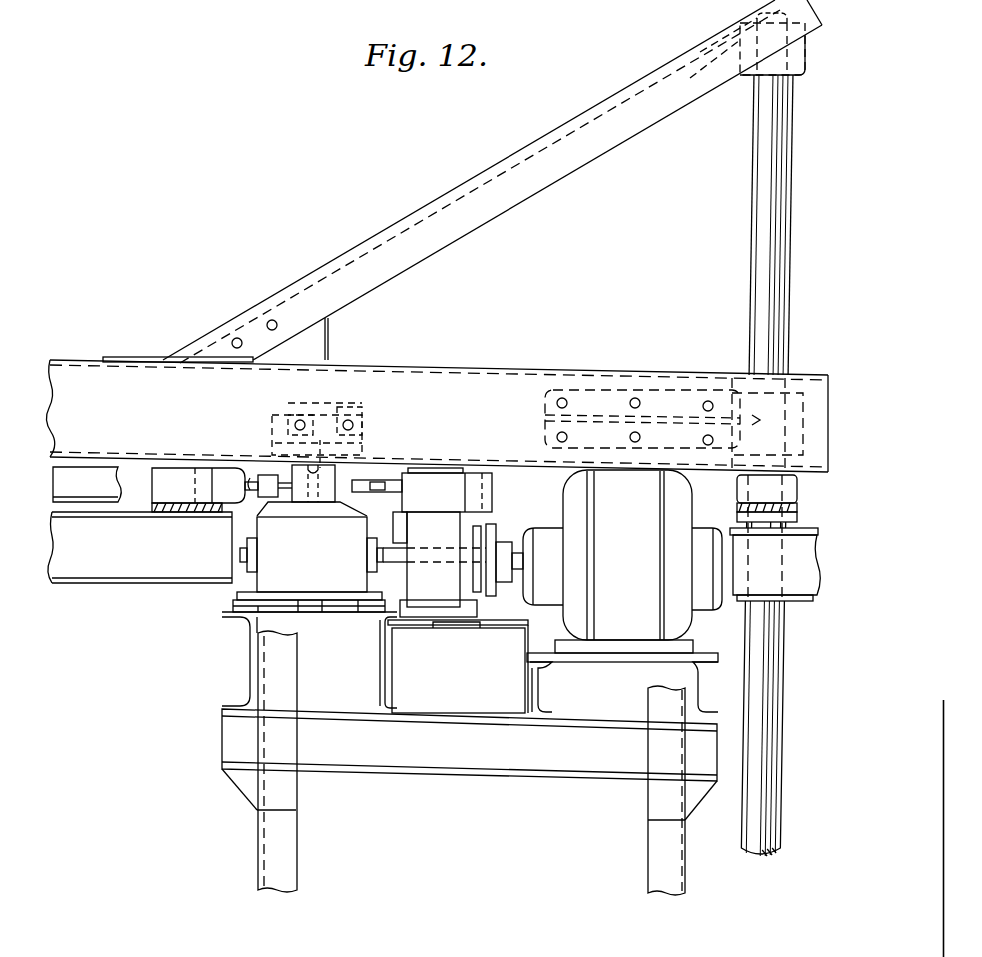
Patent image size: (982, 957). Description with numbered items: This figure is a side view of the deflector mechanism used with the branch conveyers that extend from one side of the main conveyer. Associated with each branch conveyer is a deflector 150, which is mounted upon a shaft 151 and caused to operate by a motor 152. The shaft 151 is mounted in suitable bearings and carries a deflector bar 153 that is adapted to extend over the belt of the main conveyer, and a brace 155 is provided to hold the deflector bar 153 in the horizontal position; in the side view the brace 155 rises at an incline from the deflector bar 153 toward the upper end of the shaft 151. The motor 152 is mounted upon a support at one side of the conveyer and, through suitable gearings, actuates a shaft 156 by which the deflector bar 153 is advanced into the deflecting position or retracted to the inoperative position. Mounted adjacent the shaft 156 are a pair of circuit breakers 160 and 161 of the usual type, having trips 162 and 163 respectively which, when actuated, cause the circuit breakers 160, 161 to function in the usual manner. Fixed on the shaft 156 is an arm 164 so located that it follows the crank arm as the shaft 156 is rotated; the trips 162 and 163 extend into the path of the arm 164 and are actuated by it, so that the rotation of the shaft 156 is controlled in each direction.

The deflector 150 is at (478, 362).
The shaft 151 is at (766, 653).
The motor 152 is at (622, 566).
The deflector bar 153 is at (581, 419).
The brace 155 is at (462, 181).
The shaft 156 is at (340, 472).
The circuit breaker 160 is at (198, 490).
The circuit breaker 161 is at (437, 542).
The trip 162 is at (263, 496).
The trip 163 is at (355, 488).
The arm 164 is at (282, 482).